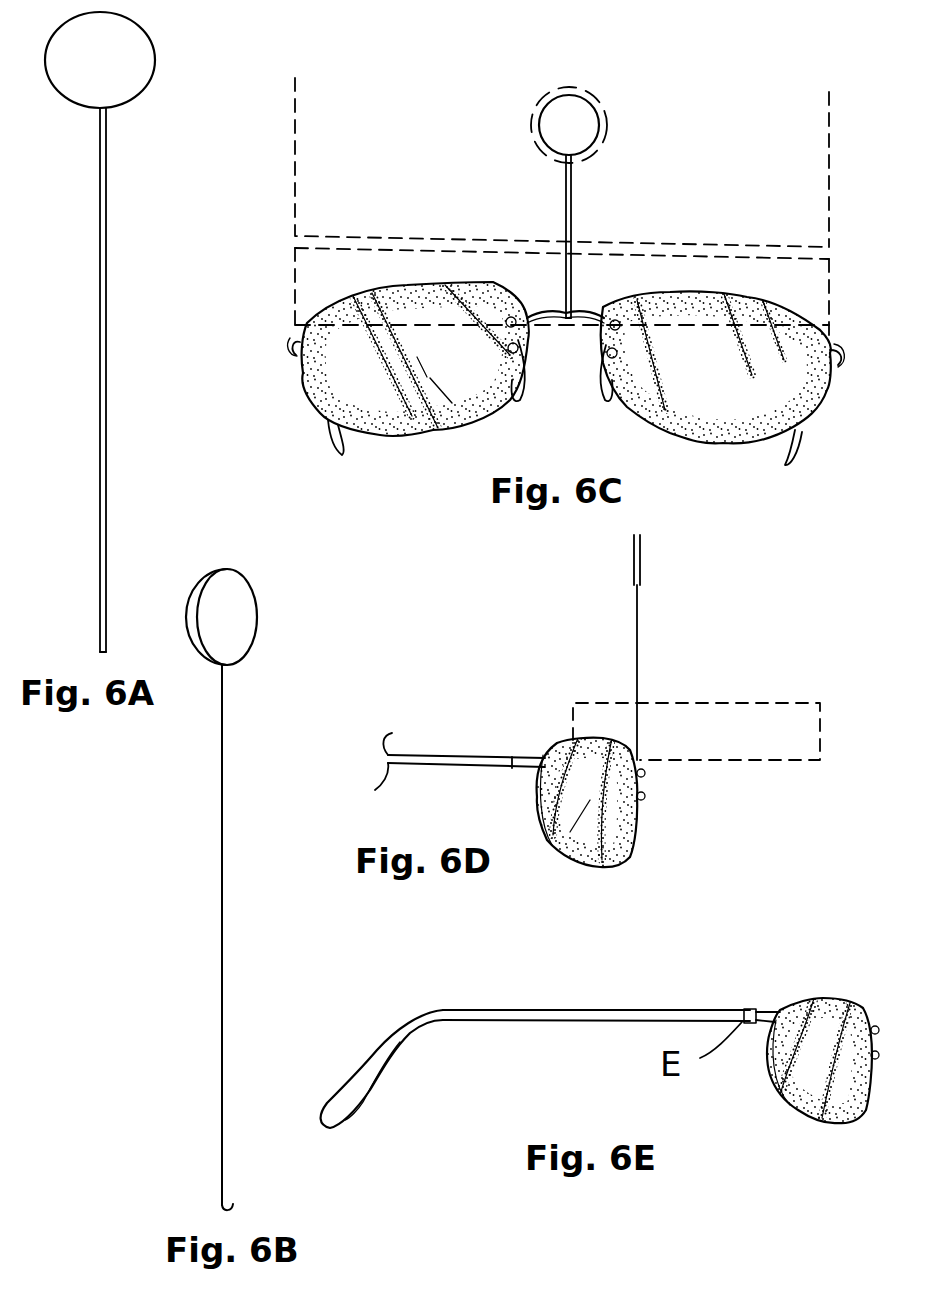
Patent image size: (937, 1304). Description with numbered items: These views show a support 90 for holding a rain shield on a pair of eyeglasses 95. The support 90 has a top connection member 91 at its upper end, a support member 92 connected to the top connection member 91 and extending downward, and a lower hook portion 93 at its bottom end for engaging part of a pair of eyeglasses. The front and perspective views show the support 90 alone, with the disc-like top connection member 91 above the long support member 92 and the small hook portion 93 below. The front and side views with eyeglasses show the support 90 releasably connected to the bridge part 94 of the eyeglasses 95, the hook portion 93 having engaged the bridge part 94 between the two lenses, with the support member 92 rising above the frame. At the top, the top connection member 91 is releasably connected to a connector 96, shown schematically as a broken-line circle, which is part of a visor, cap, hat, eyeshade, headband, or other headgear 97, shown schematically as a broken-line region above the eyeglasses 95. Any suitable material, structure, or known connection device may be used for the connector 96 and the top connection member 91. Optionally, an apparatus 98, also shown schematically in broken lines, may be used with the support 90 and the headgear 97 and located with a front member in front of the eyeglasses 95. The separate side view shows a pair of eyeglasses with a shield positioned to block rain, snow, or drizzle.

In FIG. 6A, the support 90 is at (138, 304).
In FIG. 6A, the top connection member 91 is at (125, 90).
In FIG. 6B, the top connection member 91 is at (215, 575).
In FIG. 6C, the top connection member 91 is at (562, 128).
In FIG. 6D, the top connection member 91 is at (632, 575).
In FIG. 6A, the support member 92 is at (106, 352).
In FIG. 6B, the support member 92 is at (228, 800).
In FIG. 6C, the support member 92 is at (573, 228).
In FIG. 6D, the support member 92 is at (635, 665).
In FIG. 6A, the lower hook portion 93 is at (100, 645).
In FIG. 6B, the lower hook portion 93 is at (233, 1204).
In FIG. 6C, the lower hook portion 93 is at (571, 324).
In FIG. 6C, the bridge part 94 is at (540, 310).
In FIG. 6C, the eyeglasses 95 is at (424, 432).
In FIG. 6D, the eyeglasses 95 is at (516, 768).
In FIG. 6E, the eyeglasses 95 is at (586, 971).
In FIG. 6C, the connector 96 is at (604, 108).
In FIG. 6C, the headgear 97 is at (367, 237).
In FIG. 6C, the apparatus 98 is at (295, 284).
In FIG. 6D, the apparatus 98 is at (700, 718).